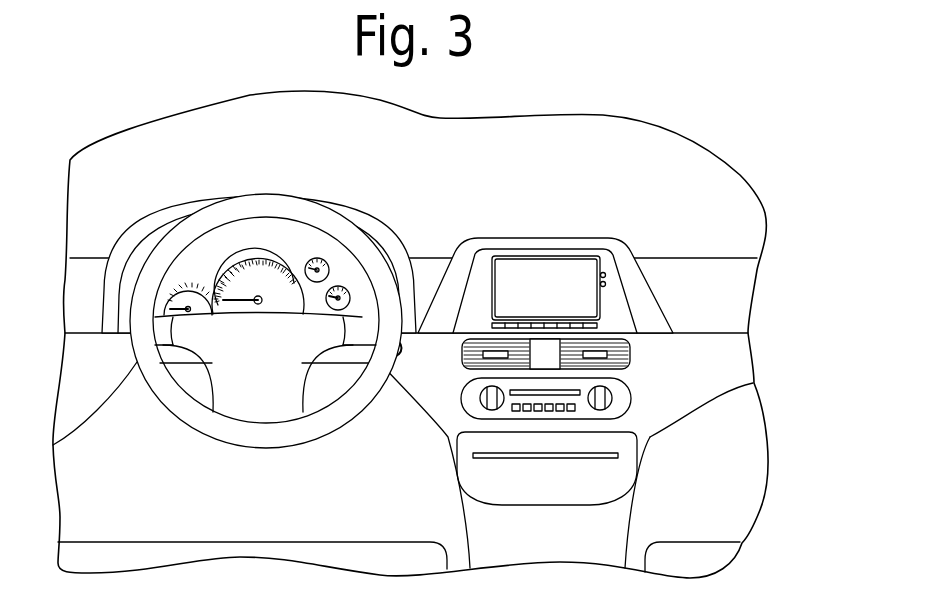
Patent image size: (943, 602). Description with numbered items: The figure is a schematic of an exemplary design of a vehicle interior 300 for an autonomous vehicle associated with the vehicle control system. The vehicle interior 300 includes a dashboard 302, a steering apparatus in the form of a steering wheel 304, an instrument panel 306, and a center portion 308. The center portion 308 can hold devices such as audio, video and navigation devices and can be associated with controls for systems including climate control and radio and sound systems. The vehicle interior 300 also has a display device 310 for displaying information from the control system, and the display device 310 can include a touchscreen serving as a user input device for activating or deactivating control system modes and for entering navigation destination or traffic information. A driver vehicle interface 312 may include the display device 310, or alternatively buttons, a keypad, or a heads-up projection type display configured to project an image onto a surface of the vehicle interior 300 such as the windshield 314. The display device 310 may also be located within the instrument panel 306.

The vehicle interior 300 is at (726, 145).
The dashboard 302 is at (424, 276).
The steering wheel 304 is at (207, 221).
The instrument panel 306 is at (265, 240).
The center portion 308 is at (452, 381).
The display device 310 is at (547, 257).
The driver vehicle interface 312 is at (604, 230).
The windshield 314 is at (370, 189).